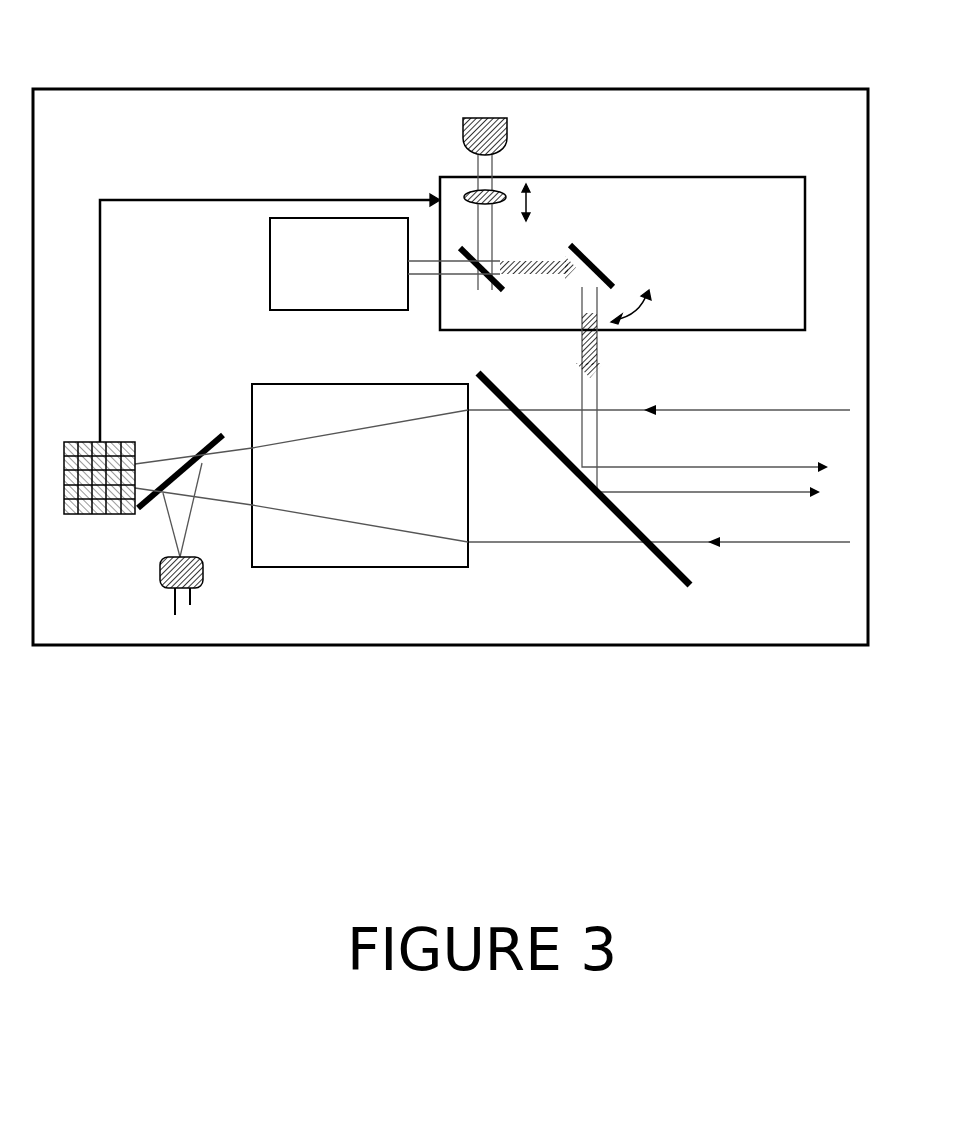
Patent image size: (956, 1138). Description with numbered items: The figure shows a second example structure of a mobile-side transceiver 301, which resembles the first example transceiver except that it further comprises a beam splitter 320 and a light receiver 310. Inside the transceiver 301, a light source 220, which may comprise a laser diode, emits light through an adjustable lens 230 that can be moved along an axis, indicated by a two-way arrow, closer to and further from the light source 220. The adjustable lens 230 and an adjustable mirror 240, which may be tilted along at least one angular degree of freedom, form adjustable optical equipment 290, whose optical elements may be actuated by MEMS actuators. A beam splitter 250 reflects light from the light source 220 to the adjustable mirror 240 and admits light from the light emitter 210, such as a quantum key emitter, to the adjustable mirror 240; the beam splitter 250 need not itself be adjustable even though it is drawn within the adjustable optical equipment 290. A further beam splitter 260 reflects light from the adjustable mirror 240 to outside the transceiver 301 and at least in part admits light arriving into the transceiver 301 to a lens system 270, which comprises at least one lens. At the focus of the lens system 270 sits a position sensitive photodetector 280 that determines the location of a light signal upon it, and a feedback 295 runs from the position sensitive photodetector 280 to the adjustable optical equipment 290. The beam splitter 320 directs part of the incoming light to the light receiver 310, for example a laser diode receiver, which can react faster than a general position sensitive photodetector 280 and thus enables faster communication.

The transceiver 301 is at (163, 89).
The feedback 295 is at (173, 200).
The adjustable optical equipment 290 is at (622, 253).
The light emitter 210 is at (339, 264).
The light source 220 is at (463, 133).
The adjustable lens 230 is at (504, 203).
The adjustable mirror 240 is at (598, 273).
The beam splitter 250 is at (488, 288).
The beam splitter 260 is at (662, 563).
The lens system 270 is at (360, 567).
The position sensitive photodetector 280 is at (100, 514).
The light receiver 310 is at (203, 578).
The beam splitter 320 is at (207, 438).